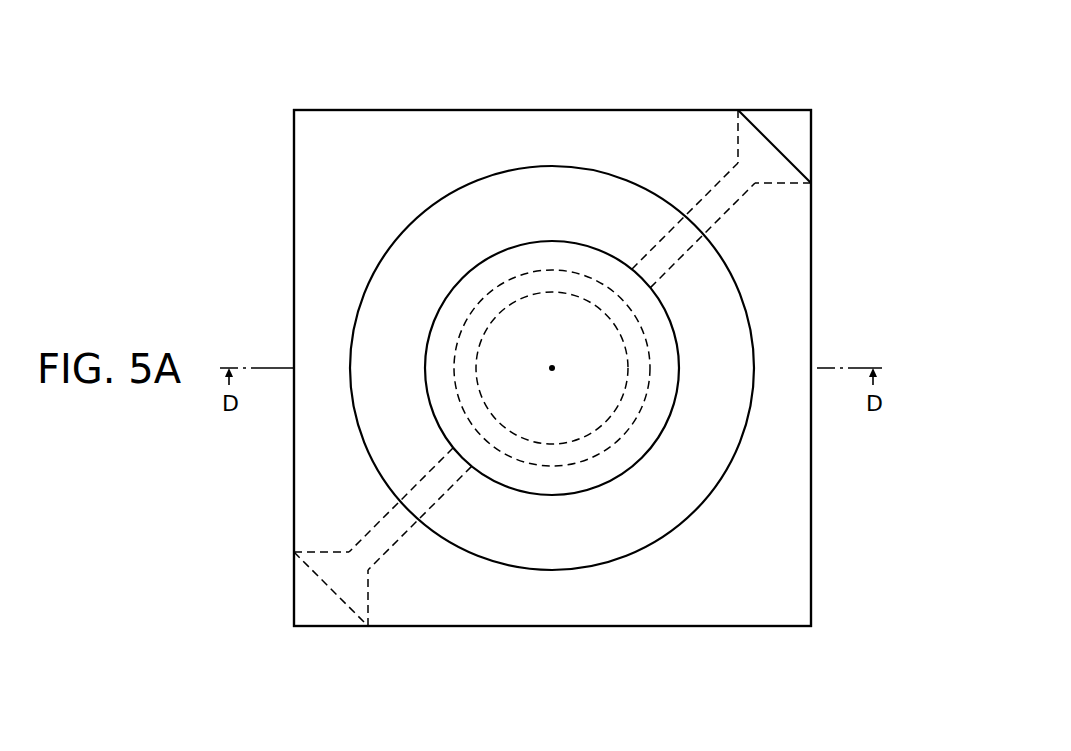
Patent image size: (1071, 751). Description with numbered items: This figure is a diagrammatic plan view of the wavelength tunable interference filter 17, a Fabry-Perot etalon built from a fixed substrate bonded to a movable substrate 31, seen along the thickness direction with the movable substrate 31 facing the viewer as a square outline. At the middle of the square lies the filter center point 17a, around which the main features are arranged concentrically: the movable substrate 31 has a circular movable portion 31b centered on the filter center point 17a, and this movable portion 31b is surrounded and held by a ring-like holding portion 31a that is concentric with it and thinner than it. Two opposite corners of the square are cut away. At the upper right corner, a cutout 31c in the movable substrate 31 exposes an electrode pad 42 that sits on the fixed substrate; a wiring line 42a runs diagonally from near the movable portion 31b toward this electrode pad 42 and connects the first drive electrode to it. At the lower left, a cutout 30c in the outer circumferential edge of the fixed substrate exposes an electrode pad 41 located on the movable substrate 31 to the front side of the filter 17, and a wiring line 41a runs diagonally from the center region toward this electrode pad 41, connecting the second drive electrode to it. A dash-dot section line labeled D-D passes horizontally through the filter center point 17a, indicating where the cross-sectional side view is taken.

The wavelength tunable interference filter 17 is at (736, 59).
The filter center point 17a is at (552, 365).
The cutout 30c is at (310, 570).
The movable substrate 31 is at (811, 258).
The holding portion 31a is at (685, 507).
The movable portion 31b is at (653, 432).
The cutout 31c is at (792, 165).
The electrode pad 41 is at (300, 608).
The wiring line 41a is at (388, 560).
The electrode pad 42 is at (800, 132).
The wiring line 42a is at (717, 187).